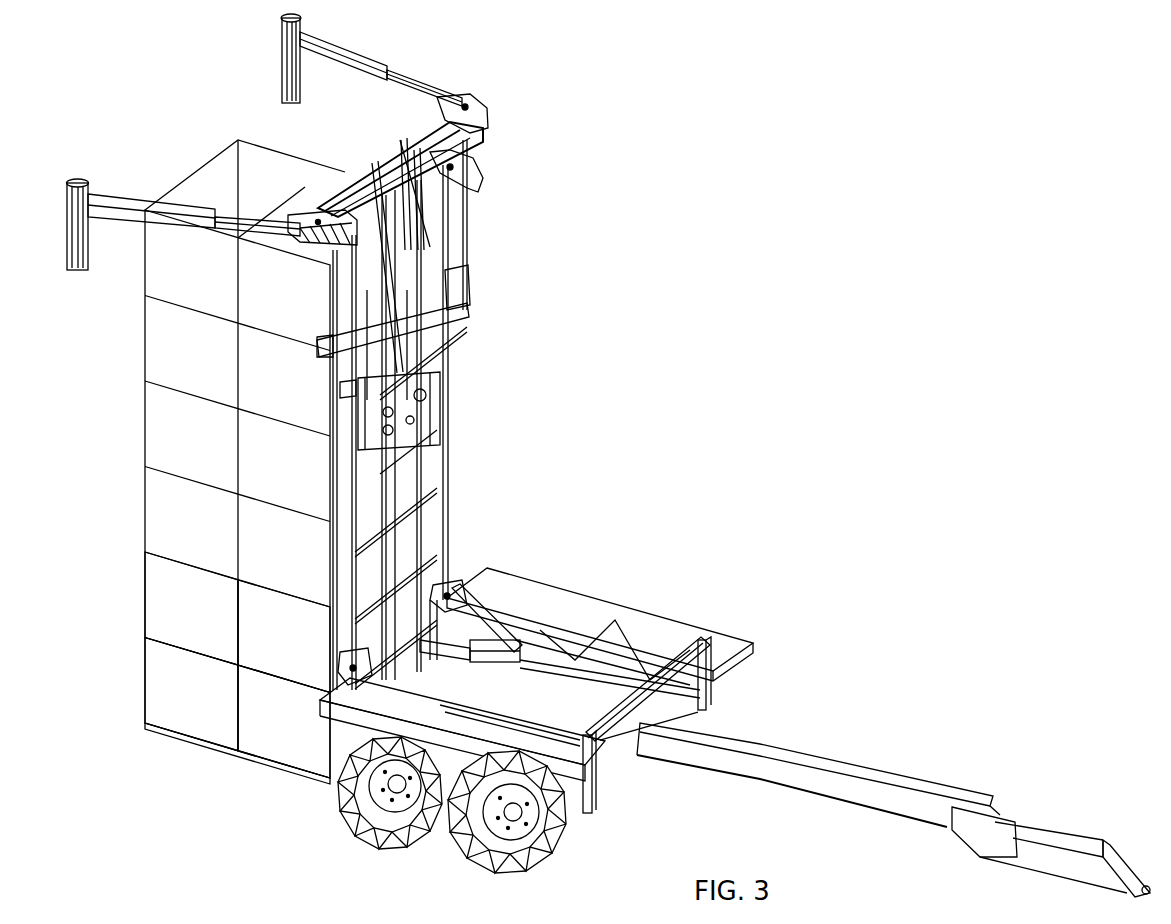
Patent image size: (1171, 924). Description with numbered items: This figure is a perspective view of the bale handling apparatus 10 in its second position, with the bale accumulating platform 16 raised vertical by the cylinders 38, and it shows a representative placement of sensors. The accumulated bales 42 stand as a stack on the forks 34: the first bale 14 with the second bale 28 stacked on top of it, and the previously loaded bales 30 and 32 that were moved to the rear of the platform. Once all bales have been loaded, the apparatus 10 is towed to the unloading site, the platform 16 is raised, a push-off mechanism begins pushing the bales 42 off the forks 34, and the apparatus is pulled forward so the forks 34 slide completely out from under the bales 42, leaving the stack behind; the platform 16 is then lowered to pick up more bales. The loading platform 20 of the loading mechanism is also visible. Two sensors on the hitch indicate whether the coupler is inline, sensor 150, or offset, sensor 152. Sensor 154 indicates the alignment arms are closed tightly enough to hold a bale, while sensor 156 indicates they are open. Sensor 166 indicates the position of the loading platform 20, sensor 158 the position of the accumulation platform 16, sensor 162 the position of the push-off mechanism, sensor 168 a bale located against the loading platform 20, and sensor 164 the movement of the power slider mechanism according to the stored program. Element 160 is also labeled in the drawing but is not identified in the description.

The apparatus 10 is at (632, 432).
The bale 14 is at (293, 649).
The bale accumulating platform 16 is at (462, 415).
The loading platform 20 is at (477, 277).
The bale 28 is at (202, 626).
The bale 30 is at (293, 729).
The bale 32 is at (202, 708).
The forks 34 is at (175, 748).
The cylinders 38 is at (497, 600).
The bales 42 is at (98, 428).
The sensor 150 is at (715, 698).
The sensor 152 is at (610, 785).
The sensor 154 is at (600, 585).
The sensor 156 is at (487, 645).
The sensor 158 is at (655, 640).
The pivot bracket 160 is at (333, 668).
The sensor 162 is at (433, 623).
The sensor 164 is at (405, 688).
The sensor 166 is at (345, 388).
The sensor 168 is at (470, 207).